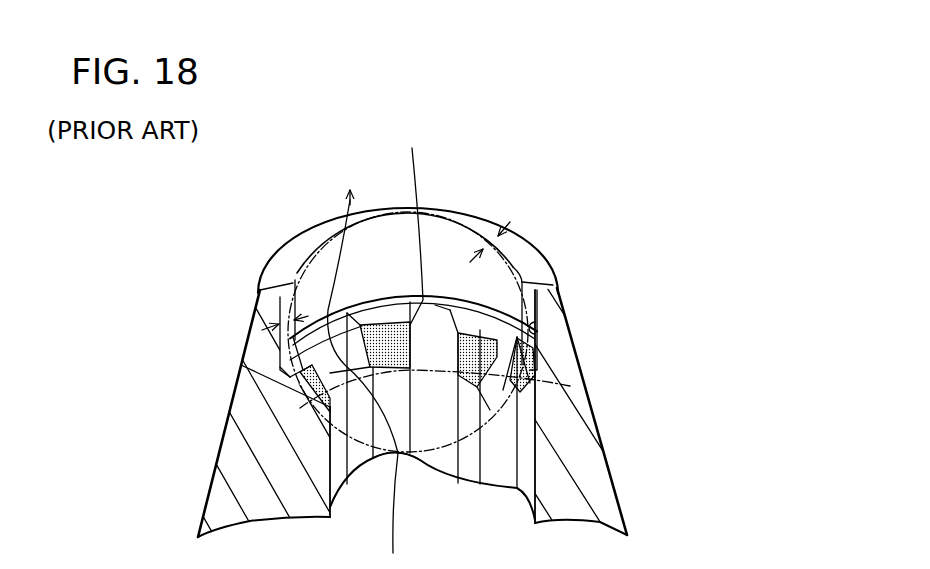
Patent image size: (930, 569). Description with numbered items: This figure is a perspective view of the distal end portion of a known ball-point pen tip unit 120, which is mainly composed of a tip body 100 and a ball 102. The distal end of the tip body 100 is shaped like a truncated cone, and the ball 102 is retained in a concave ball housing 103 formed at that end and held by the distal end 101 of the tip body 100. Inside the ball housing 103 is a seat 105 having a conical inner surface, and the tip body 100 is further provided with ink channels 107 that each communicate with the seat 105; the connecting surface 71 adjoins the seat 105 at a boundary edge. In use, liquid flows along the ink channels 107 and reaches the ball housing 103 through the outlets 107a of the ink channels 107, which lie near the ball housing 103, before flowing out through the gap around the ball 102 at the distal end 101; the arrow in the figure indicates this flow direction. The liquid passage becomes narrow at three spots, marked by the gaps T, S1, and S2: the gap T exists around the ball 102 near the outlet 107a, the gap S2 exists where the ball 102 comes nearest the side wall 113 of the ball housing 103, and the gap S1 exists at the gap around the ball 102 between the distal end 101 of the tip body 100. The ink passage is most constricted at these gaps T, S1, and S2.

The tip body 100 is at (597, 480).
The distal end 101 is at (290, 282).
The ball 102 is at (497, 273).
The ball housing 103 is at (283, 340).
The seat 105 is at (570, 386).
The ink channel 107 is at (437, 467).
The outlet 107a is at (457, 325).
The side wall 113 is at (537, 337).
The connecting surface 71 is at (497, 340).
The tip unit 120 is at (685, 83).
The gap T is at (413, 223).
The gap S1 is at (490, 232).
The gap S2 is at (280, 307).